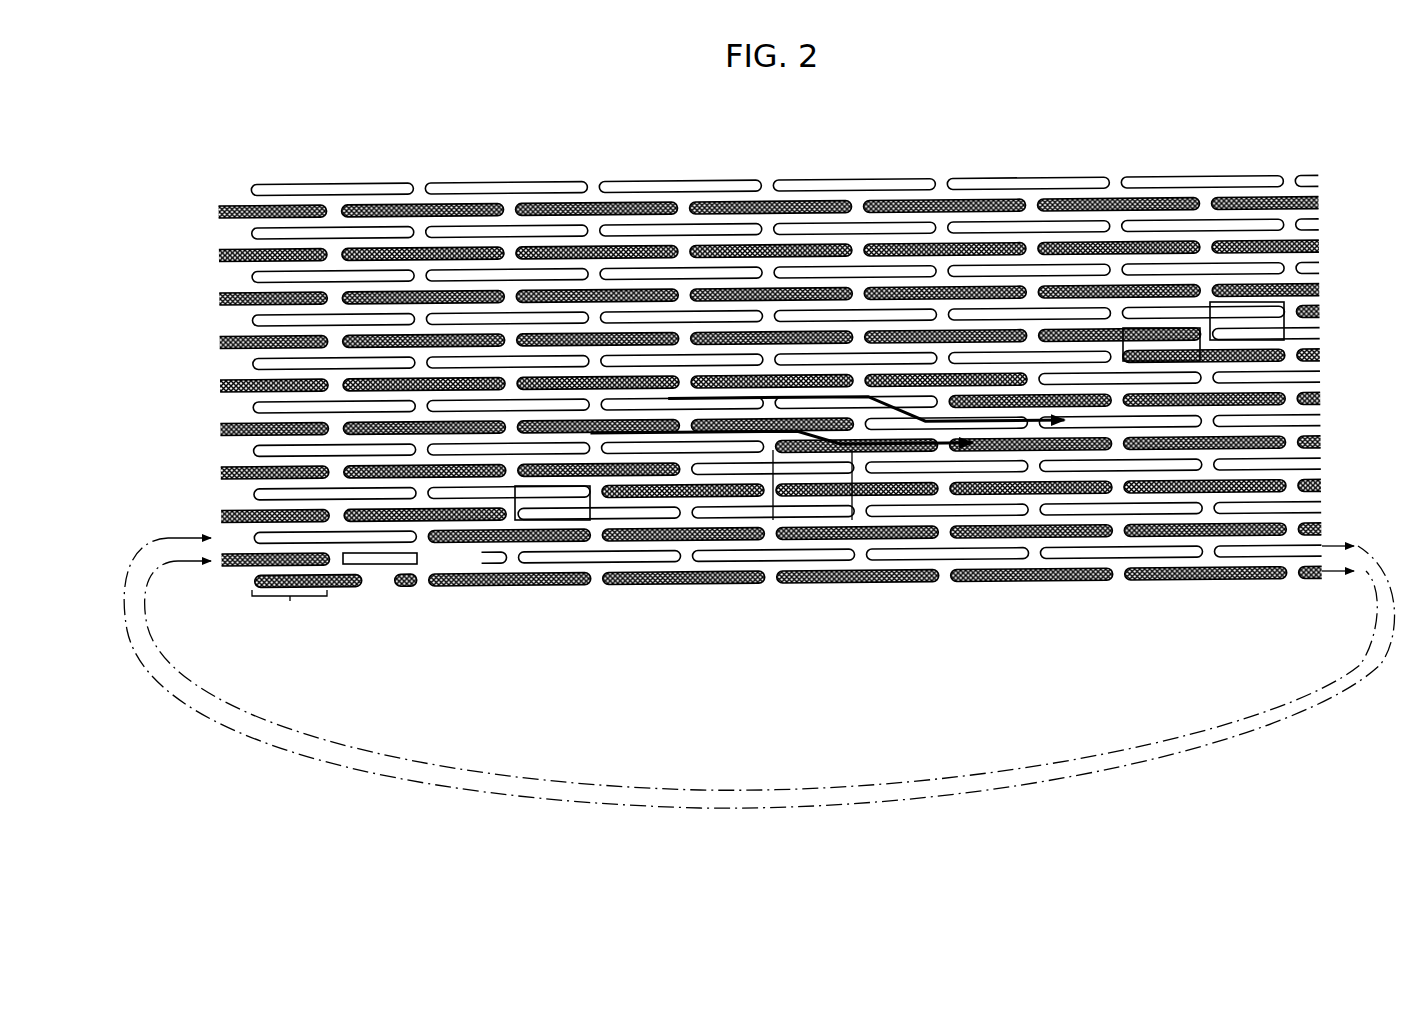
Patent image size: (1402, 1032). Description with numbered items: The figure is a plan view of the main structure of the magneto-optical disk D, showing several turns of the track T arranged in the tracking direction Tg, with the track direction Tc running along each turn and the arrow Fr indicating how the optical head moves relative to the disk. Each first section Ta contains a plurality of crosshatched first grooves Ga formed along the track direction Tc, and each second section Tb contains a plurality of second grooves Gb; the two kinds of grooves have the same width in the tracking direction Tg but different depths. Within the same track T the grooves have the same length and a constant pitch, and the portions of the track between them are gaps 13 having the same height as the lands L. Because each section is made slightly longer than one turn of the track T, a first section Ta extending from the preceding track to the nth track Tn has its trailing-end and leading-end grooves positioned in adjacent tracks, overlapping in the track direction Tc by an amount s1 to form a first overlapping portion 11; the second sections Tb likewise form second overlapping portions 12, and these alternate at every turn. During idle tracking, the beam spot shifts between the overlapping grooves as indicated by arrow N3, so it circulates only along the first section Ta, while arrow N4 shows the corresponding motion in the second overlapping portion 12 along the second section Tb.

The first overlapping portion 11 is at (417, 559).
The second overlapping portion 12 is at (1160, 327).
The gap 13 is at (336, 258).
The magneto-optical disk D is at (356, 112).
The land L is at (482, 203).
The first groove Ga is at (273, 205).
The second groove Gb is at (325, 188).
The first section Ta is at (570, 420).
The second section Tb is at (482, 400).
The arrow N3 is at (685, 426).
The arrow N4 is at (670, 398).
The overlap amount s1 is at (850, 511).
The track T is at (1322, 352).
The nth track Tn is at (238, 453).
The head movement direction Fr is at (1020, 125).
The tracking direction Tg is at (990, 92).
The track direction Tc is at (992, 93).